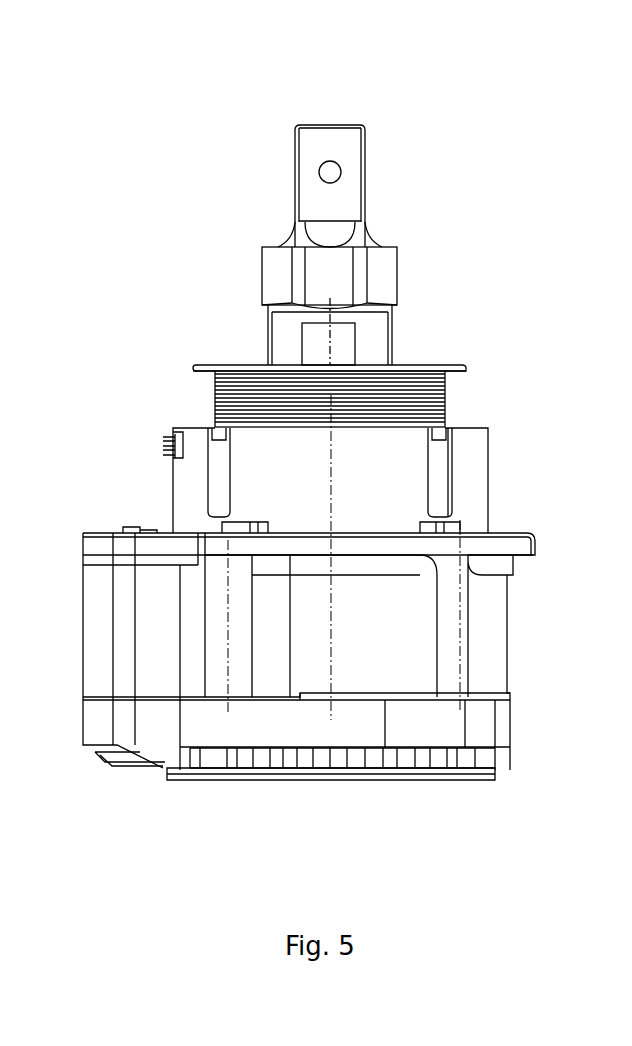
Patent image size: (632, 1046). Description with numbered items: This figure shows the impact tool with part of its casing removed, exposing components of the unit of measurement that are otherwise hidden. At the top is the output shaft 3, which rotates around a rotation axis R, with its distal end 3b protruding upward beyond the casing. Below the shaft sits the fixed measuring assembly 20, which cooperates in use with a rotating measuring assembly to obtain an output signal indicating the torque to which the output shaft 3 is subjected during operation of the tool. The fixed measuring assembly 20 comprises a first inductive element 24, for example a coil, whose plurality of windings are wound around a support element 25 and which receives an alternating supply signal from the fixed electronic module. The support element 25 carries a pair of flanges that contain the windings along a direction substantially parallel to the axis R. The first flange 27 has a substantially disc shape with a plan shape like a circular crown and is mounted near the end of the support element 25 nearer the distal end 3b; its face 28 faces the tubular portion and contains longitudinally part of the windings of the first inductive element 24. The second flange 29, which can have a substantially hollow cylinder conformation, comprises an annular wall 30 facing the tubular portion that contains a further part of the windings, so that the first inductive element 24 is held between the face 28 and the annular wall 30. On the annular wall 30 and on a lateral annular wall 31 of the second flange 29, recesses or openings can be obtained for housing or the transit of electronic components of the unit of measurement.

The distal end 3b is at (276, 133).
The output shaft 3 is at (262, 290).
The first flange 27 is at (214, 366).
The first inductive element 24 is at (445, 394).
The face 28 is at (456, 372).
The fixed measuring assembly 20 is at (173, 368).
The support element 25 is at (165, 418).
The annular wall 30 is at (478, 426).
The second flange 29 is at (515, 432).
The lateral annular wall 31 is at (488, 495).